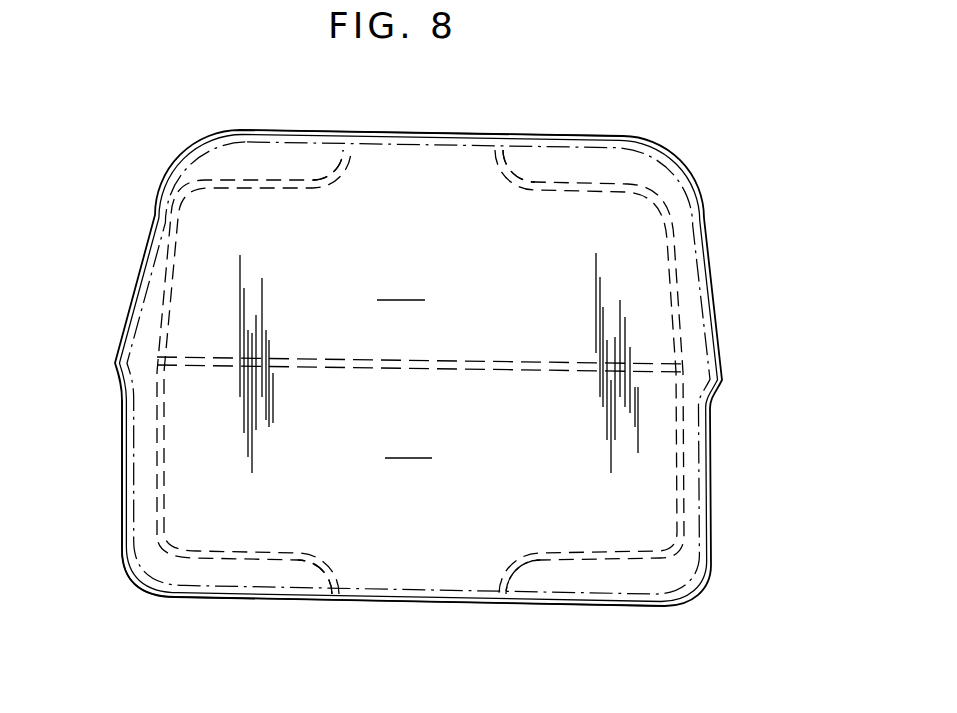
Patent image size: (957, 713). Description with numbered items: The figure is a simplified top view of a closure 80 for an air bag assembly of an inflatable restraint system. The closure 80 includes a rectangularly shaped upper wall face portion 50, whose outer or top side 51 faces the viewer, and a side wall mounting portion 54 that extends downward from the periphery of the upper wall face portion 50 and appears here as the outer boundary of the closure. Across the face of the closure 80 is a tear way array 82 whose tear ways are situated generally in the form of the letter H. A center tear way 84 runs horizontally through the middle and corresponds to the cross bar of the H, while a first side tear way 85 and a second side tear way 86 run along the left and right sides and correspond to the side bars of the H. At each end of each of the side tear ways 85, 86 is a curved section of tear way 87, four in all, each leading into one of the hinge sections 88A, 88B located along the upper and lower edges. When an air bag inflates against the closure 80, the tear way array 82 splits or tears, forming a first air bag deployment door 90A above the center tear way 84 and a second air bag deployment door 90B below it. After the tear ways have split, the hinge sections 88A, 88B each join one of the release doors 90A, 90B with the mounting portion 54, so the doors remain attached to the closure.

The closure 80 is at (752, 281).
The tear way array 82 is at (695, 358).
The center tear way 84 is at (538, 371).
The first side tear way 85 is at (163, 284).
The second side tear way 86 is at (676, 283).
The curved section of tear way 87 is at (314, 172).
The hinge section 88A is at (403, 176).
The hinge section 88B is at (412, 570).
The first air bag deployment door 90A is at (401, 287).
The second air bag deployment door 90B is at (408, 445).
The upper wall face portion 50 is at (190, 248).
The outer or top side 51 is at (187, 463).
The side wall mounting portion 54 is at (135, 347).